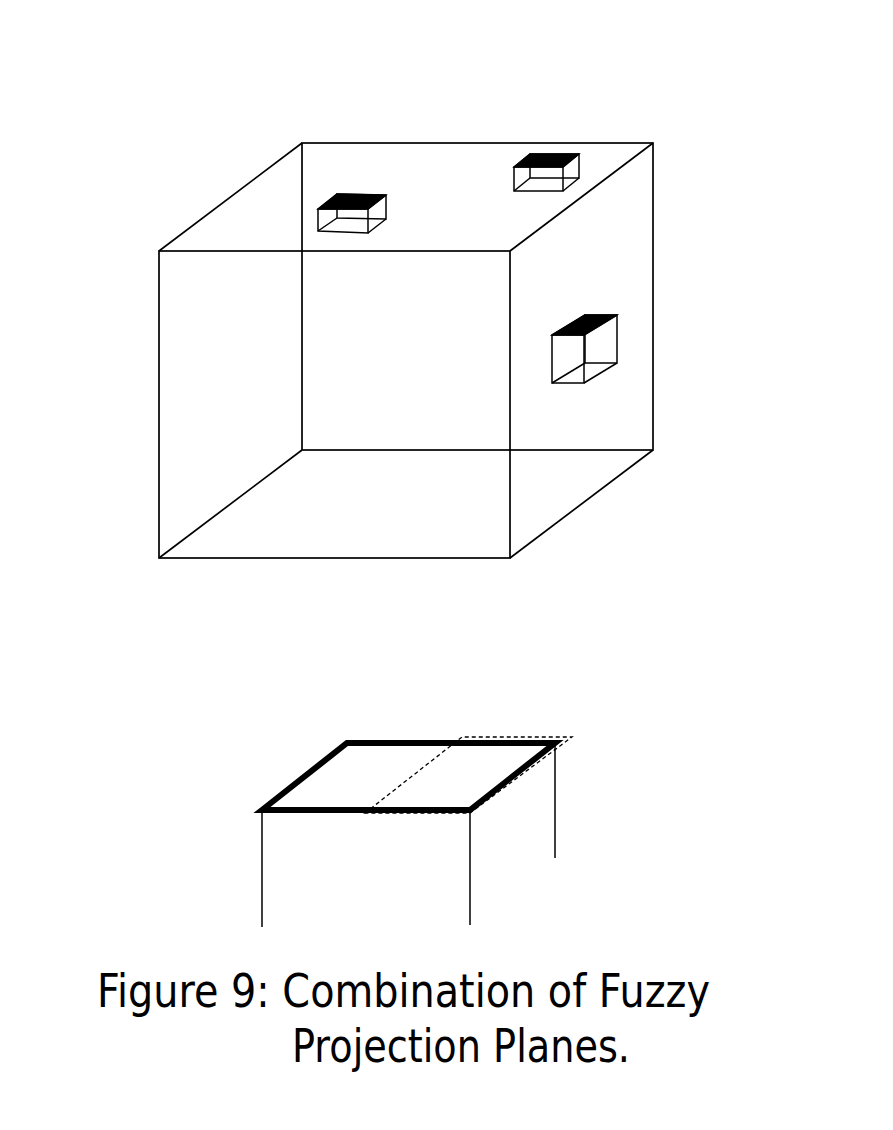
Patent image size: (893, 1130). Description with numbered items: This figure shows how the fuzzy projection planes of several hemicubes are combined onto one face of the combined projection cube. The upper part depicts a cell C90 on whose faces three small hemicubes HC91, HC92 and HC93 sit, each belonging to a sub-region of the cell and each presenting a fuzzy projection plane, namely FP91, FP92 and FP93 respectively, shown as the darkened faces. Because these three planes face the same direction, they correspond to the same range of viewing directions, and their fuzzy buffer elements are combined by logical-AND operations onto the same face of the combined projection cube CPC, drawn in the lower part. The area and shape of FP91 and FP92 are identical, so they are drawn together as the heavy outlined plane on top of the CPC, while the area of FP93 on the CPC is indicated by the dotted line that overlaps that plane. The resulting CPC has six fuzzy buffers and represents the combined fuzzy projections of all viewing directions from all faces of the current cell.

The cube C90 is at (153, 415).
The hemicube HC91 is at (488, 111).
The hemicube HC92 is at (318, 218).
The hemicube HC93 is at (605, 342).
The fuzzy projection plane FP91 is at (537, 152).
The fuzzy projection plane FP92 is at (348, 192).
The fuzzy projection plane FP93 is at (586, 315).
The combined projection cube CPC is at (258, 898).